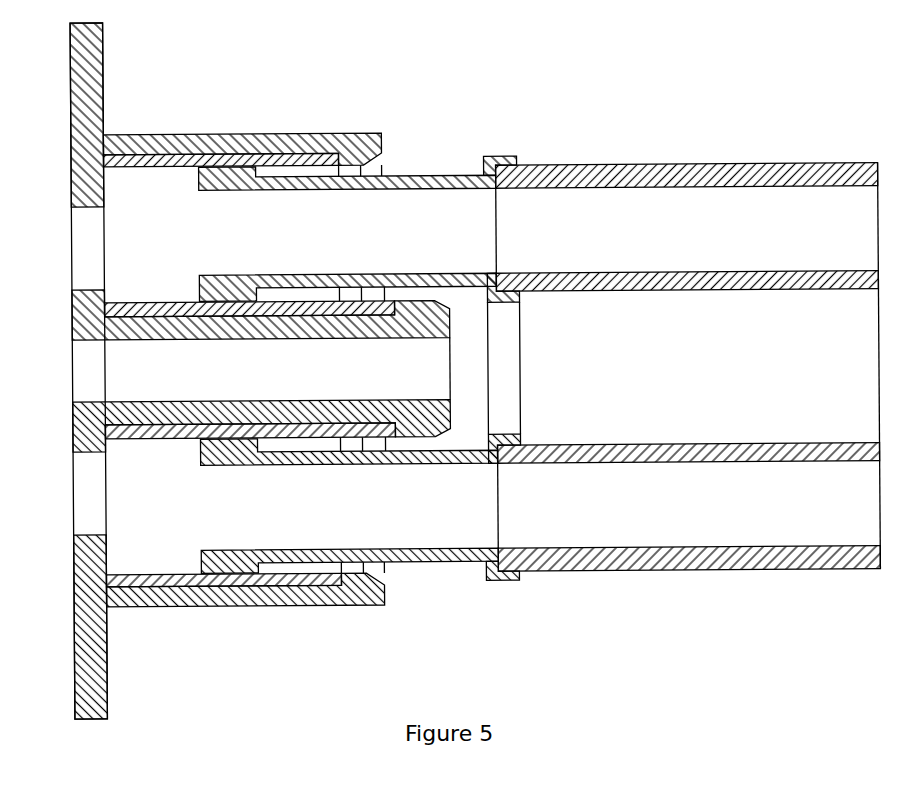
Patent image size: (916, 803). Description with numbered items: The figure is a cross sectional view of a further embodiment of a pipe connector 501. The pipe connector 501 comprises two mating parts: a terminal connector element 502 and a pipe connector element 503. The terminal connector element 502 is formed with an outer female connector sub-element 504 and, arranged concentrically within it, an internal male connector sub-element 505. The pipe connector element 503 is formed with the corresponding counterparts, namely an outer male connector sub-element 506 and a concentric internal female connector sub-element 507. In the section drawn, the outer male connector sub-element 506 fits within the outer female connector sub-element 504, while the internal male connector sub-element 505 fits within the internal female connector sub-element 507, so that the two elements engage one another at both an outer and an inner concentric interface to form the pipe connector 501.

The pipe connector 501 is at (604, 626).
The terminal connector element 502 is at (87, 63).
The pipe connector element 503 is at (512, 160).
The outer female connector sub-element 504 is at (223, 147).
The internal male connector sub-element 505 is at (147, 432).
The outer male connector sub-element 506 is at (402, 180).
The internal female connector sub-element 507 is at (377, 465).